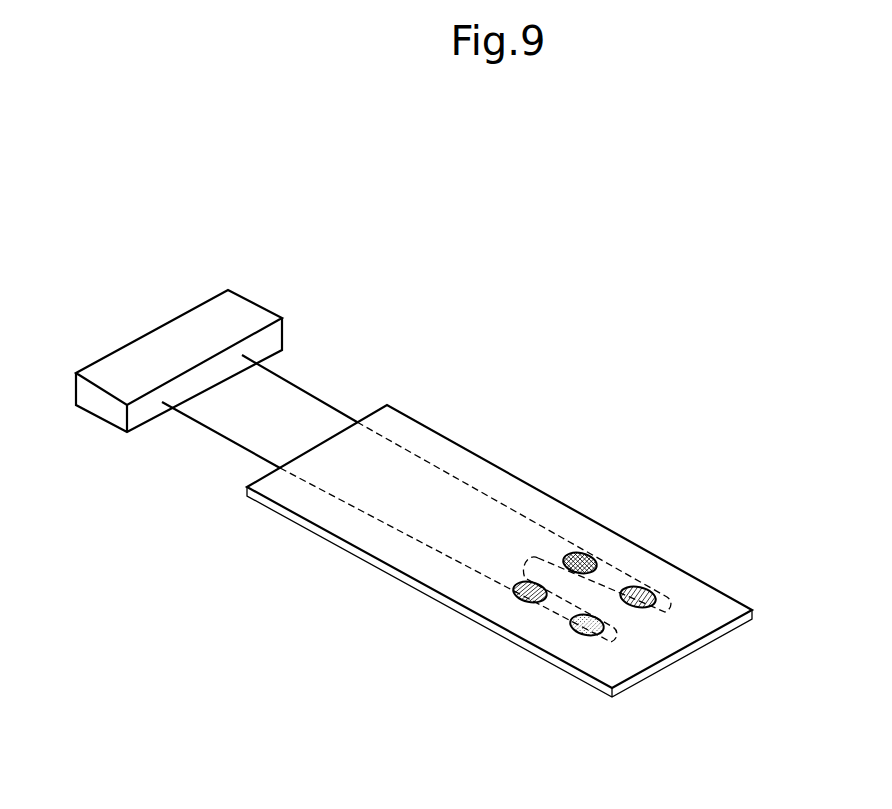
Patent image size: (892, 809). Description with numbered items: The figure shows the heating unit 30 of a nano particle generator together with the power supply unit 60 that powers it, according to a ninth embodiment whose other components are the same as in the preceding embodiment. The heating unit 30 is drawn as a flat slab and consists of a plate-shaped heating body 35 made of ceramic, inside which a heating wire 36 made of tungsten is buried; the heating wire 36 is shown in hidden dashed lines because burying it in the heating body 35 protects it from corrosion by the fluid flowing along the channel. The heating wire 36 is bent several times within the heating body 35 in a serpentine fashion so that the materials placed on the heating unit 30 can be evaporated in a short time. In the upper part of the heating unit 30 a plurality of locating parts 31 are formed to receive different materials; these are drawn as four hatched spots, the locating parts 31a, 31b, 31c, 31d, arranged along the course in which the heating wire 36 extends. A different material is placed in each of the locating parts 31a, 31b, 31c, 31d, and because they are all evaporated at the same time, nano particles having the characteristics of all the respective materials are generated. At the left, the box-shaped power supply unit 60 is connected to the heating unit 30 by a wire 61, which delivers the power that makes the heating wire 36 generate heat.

The heating unit 30 is at (498, 460).
The locating parts 31 is at (522, 642).
The locating part 31a is at (565, 556).
The locating part 31b is at (621, 594).
The locating part 31c is at (573, 663).
The locating part 31d is at (513, 589).
The heating body 35 is at (707, 590).
The heating wire 36 is at (618, 567).
The power supply unit 60 is at (247, 307).
The wire 61 is at (317, 393).